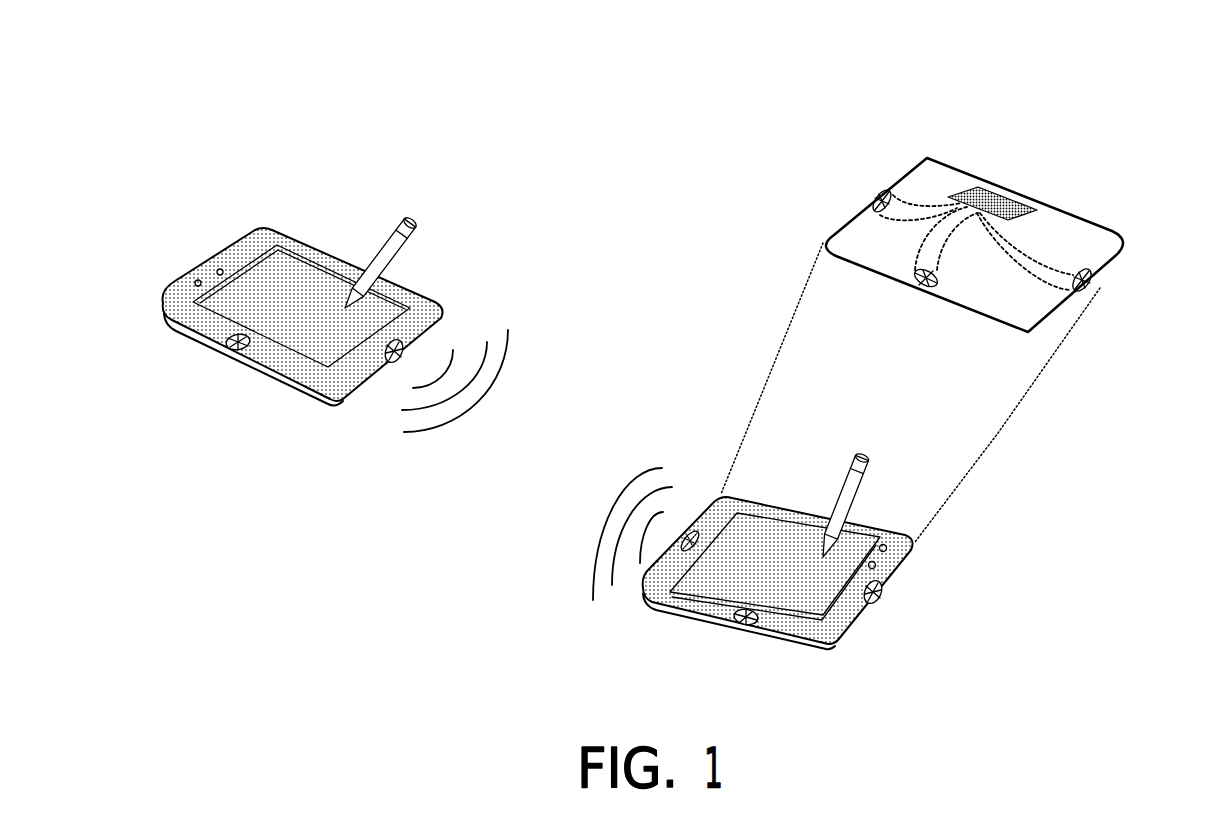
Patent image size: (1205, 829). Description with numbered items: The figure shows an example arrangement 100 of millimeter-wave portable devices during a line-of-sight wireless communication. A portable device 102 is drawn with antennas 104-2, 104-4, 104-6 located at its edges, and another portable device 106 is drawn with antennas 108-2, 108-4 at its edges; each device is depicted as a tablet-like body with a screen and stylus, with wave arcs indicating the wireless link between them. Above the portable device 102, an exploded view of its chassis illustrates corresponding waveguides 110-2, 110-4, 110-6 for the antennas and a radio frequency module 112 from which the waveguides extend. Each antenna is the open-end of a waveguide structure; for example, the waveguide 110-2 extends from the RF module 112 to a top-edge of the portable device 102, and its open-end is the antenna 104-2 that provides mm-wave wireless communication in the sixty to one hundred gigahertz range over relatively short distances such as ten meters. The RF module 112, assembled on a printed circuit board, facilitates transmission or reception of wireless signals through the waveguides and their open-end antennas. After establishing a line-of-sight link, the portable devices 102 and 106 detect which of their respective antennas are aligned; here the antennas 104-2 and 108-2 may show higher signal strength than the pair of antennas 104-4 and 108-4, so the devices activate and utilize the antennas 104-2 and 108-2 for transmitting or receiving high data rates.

The arrangement 100 is at (168, 73).
The portable device 102 is at (565, 637).
The antenna 104-2 is at (697, 533).
The antenna 104-4 is at (738, 626).
The antenna 104-6 is at (893, 590).
The portable device 106 is at (203, 233).
The antenna 108-2 is at (410, 340).
The antenna 108-4 is at (228, 351).
The waveguide 110-2 is at (920, 200).
The waveguide 110-4 is at (915, 265).
The waveguide 110-6 is at (1032, 253).
The radio frequency (RF) module 112 is at (984, 207).